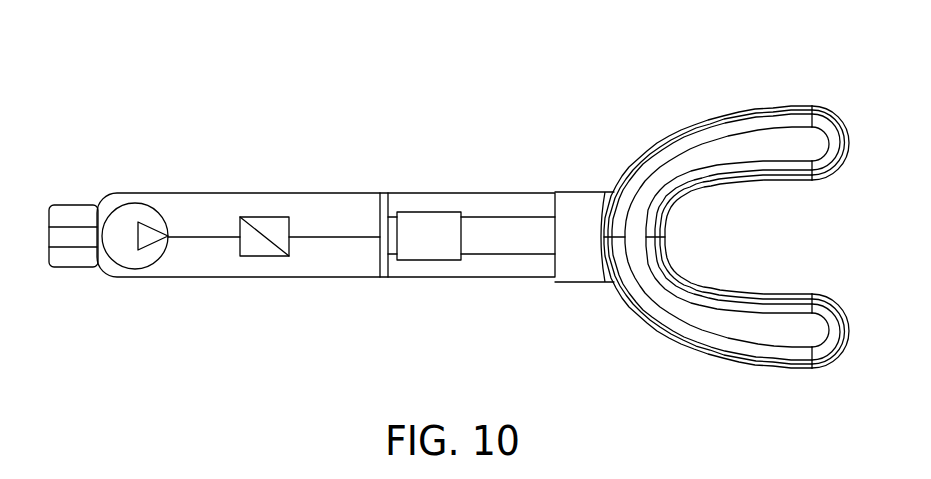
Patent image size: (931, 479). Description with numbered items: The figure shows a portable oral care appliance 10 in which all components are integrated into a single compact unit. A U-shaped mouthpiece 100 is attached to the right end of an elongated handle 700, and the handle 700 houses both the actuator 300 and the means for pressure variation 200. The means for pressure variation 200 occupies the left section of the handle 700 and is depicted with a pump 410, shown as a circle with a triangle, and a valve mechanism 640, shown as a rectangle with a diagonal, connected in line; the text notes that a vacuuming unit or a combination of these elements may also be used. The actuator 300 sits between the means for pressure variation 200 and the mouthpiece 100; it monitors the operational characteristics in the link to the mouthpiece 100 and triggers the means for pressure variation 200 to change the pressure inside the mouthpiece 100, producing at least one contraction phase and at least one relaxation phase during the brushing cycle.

The portable oral care appliance 10 is at (402, 80).
The mouthpiece 100 is at (745, 128).
The means for pressure variation 200 is at (388, 285).
The actuator 300 is at (420, 222).
The pump 410 is at (123, 203).
The valve mechanism 640 is at (262, 217).
The handle 700 is at (50, 325).